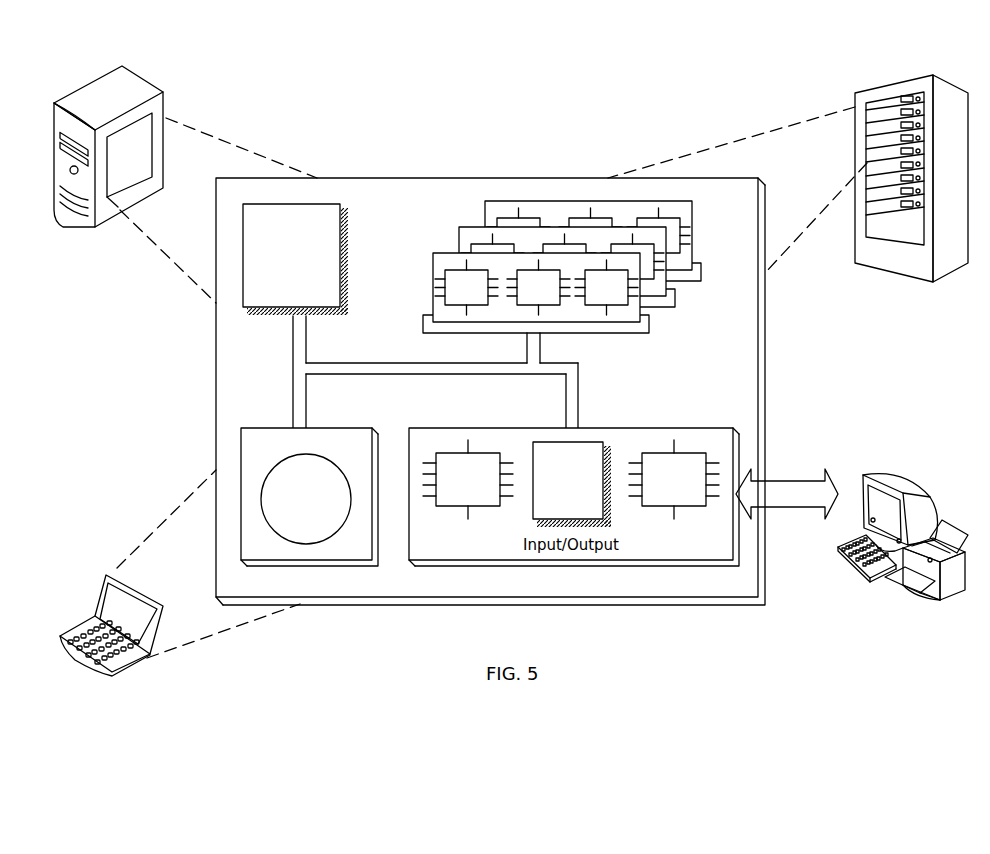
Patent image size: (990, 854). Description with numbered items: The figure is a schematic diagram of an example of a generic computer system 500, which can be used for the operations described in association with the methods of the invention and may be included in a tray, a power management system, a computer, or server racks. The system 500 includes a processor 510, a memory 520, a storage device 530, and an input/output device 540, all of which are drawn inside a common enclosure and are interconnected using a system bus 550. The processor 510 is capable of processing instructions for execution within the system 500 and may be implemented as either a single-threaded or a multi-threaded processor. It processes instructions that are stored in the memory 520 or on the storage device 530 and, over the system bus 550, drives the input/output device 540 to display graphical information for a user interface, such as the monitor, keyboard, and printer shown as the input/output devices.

The generic computer system 500 is at (359, 85).
The processor 510 is at (295, 259).
The memory 520 is at (698, 307).
The storage device 530 is at (309, 497).
The input/output device 540 is at (867, 480).
The system bus 550 is at (432, 377).